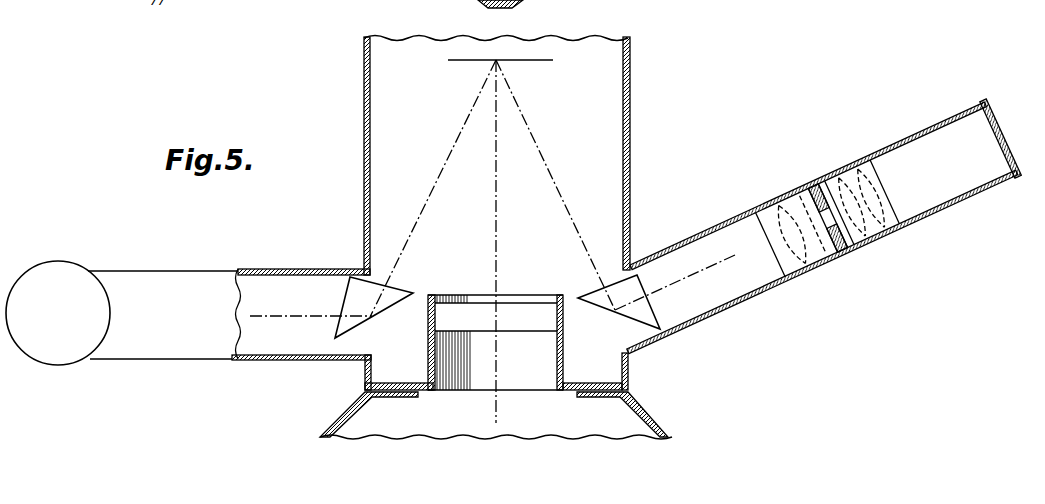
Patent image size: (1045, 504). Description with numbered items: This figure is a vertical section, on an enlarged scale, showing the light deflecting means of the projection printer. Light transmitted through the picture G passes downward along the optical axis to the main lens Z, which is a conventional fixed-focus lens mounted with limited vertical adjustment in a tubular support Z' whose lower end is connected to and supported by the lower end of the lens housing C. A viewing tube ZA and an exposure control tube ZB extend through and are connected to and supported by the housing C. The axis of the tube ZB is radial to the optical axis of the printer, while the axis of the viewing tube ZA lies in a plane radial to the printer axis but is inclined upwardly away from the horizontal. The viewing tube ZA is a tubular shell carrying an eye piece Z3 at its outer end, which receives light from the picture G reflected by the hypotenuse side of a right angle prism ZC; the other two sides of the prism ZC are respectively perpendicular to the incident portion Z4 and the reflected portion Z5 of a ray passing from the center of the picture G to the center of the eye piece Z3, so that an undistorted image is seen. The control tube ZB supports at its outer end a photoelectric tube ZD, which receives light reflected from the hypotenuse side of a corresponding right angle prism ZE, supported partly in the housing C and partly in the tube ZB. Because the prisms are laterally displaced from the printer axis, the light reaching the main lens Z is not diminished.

The lens housing C is at (632, 133).
The picture G is at (540, 58).
The main lens Z is at (495, 323).
The tubular support Z' is at (496, 387).
The eye piece Z3 is at (997, 103).
The incident portion of light ray Z4 is at (548, 165).
The reflected portion of light ray Z5 is at (735, 263).
The viewing tube ZA is at (890, 142).
The exposure control tube ZB is at (195, 268).
The right angle prism ZC is at (642, 274).
The photoelectric tube ZD is at (60, 265).
The right angle prism ZE is at (355, 290).